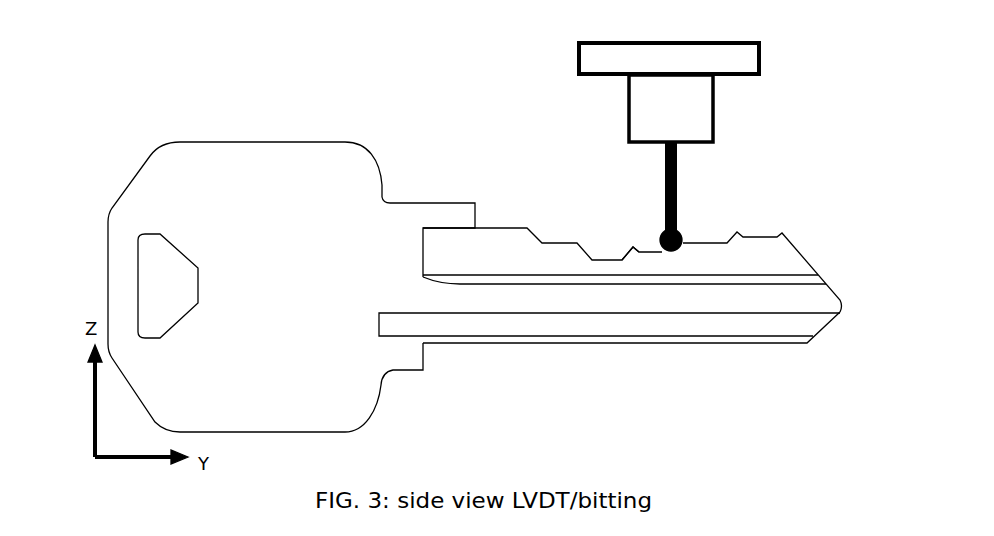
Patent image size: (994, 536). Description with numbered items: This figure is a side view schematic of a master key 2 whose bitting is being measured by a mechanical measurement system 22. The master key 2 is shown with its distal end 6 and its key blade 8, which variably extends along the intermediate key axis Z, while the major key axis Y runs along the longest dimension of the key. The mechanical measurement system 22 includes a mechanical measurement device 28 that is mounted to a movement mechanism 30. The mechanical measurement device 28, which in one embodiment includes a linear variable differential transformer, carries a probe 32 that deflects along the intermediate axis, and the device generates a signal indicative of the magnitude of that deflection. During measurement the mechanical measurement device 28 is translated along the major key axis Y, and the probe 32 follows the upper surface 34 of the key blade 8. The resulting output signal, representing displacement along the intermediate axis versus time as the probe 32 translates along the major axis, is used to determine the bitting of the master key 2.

The master key 2 is at (288, 145).
The distal end 6 is at (830, 322).
The key blade 8 is at (792, 257).
The mechanical measurement system 22 is at (631, 137).
The mechanical measurement device 28 is at (714, 108).
The movement mechanism 30 is at (760, 57).
The probe 32 is at (673, 177).
The upper surface 34 is at (631, 250).